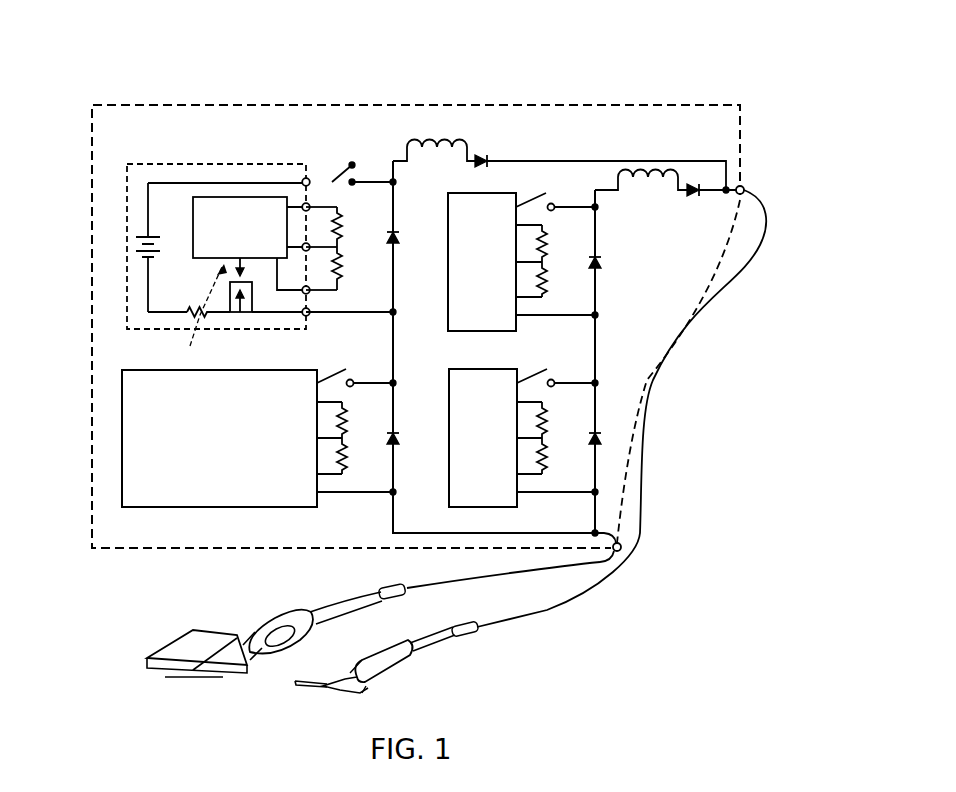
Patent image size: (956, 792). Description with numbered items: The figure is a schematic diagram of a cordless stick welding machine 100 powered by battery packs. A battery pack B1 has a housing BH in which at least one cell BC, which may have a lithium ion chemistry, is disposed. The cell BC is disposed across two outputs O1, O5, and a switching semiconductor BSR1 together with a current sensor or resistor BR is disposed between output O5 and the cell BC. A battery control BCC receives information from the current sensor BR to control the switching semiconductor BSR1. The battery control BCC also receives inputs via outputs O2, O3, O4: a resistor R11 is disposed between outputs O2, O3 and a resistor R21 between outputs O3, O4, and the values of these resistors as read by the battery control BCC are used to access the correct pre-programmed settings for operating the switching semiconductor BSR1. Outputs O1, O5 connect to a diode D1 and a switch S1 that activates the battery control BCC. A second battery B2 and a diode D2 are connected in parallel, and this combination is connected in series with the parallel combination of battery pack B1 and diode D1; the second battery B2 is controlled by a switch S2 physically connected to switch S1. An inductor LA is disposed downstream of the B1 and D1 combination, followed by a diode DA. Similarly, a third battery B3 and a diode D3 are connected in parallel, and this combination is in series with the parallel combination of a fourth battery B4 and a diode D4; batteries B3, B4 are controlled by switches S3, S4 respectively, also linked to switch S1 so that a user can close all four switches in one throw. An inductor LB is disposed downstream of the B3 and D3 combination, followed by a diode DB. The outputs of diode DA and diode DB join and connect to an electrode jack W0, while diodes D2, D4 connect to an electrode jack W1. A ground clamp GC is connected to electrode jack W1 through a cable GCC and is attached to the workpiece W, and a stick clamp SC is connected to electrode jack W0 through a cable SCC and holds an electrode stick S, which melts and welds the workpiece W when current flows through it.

The cordless stick welding machine 100 is at (745, 116).
The battery pack B1 is at (222, 164).
The housing BH is at (152, 329).
The cell BC is at (155, 235).
The battery control BCC is at (249, 243).
The current sensor or resistor BR is at (204, 316).
The switching semiconductor BSR1 is at (253, 299).
The output O1 is at (309, 178).
The output O2 is at (311, 209).
The output O3 is at (337, 247).
The output O4 is at (337, 290).
The output O5 is at (311, 315).
The switch S1 is at (339, 164).
The switch S2 is at (335, 376).
The switch S3 is at (546, 195).
The switch S4 is at (546, 371).
The resistor R11 is at (343, 223).
The resistor R21 is at (343, 264).
The diode D1 is at (400, 239).
The diode D2 is at (400, 440).
The diode D3 is at (602, 263).
The diode D4 is at (602, 438).
The second battery B2 is at (257, 438).
The third battery B3 is at (521, 262).
The fourth battery B4 is at (522, 438).
The inductor LA is at (444, 137).
The diode DA is at (484, 157).
The inductor LB is at (652, 172).
The diode DB is at (691, 198).
The electrode jack W0 is at (745, 187).
The electrode jack W1 is at (622, 546).
The cable SCC is at (463, 633).
The cable GCC is at (417, 589).
The ground clamp GC is at (300, 648).
The stick clamp SC is at (383, 663).
The workpiece W is at (222, 676).
The electrode stick S is at (297, 688).